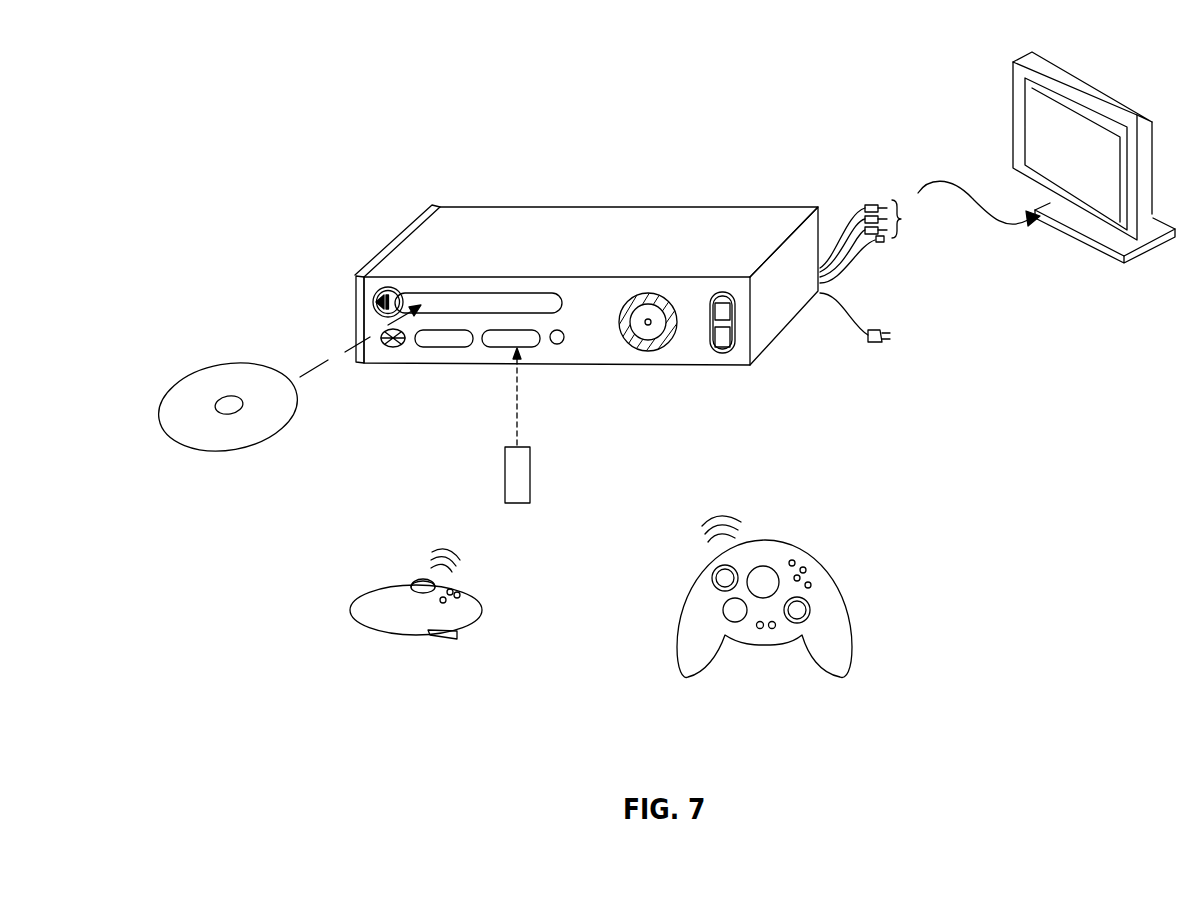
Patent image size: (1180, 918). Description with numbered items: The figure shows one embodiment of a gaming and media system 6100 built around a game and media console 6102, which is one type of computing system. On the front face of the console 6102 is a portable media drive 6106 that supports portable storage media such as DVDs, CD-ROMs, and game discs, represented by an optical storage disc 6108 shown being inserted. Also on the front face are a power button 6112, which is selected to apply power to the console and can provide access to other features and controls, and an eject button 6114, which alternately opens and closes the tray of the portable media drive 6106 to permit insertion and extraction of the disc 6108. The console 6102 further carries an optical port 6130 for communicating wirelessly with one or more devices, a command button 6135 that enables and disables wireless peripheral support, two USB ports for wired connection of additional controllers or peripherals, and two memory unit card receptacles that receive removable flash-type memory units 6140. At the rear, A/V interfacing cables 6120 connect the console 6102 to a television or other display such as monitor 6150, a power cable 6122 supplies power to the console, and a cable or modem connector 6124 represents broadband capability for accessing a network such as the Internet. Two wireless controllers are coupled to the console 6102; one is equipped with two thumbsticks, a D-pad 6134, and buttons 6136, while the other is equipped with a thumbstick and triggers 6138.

The gaming and media system 6100 is at (617, 173).
The game and media console 6102 is at (470, 218).
The portable media drive 6106 is at (488, 291).
The optical storage disc 6108 is at (238, 447).
The power button 6112 is at (648, 341).
The eject button 6114 is at (376, 302).
The A/V interfacing cables 6120 is at (868, 204).
The power cable 6122 is at (869, 344).
The cable or modem connector 6124 is at (880, 244).
The optical port 6130 is at (395, 348).
The D-pad 6134 is at (723, 610).
The command button 6135 is at (557, 345).
The buttons 6136 is at (806, 570).
The triggers 6138 is at (458, 641).
The removable flash-type memory unit 6140 is at (530, 501).
The monitor 6150 is at (1013, 118).